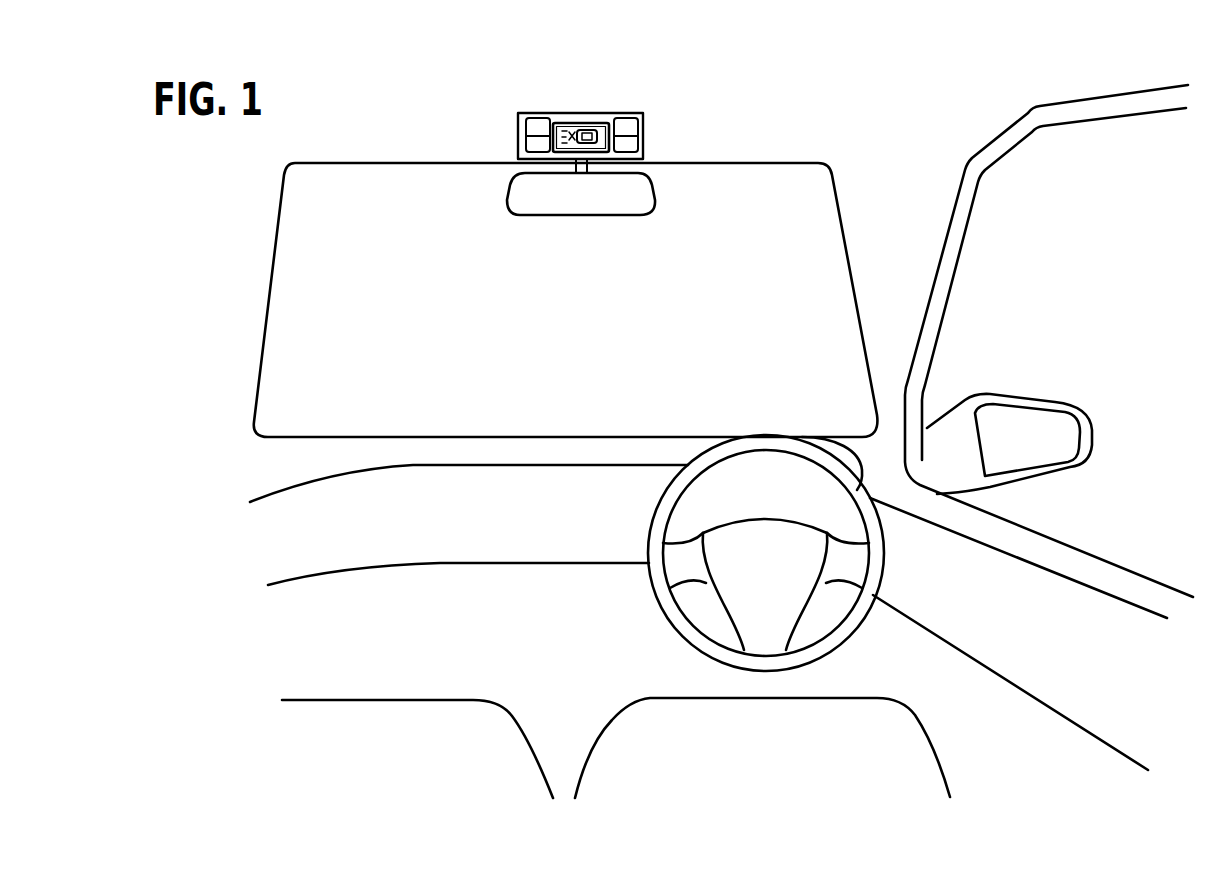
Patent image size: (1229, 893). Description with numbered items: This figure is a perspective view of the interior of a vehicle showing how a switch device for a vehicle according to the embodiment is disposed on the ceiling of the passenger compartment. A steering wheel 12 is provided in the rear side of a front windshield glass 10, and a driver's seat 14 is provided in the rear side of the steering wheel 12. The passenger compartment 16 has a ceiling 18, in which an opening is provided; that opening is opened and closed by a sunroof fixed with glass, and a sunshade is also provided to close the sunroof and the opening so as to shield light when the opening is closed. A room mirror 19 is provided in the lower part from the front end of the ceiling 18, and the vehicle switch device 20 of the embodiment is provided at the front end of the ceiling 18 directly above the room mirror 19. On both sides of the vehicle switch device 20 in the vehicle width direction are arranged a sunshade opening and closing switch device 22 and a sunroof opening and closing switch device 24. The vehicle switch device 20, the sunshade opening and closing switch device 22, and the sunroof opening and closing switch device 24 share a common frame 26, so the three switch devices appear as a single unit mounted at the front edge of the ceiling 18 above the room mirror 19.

The front windshield glass 10 is at (387, 255).
The steering wheel 12 is at (847, 437).
The driver's seat 14 is at (883, 740).
The passenger compartment 16 is at (427, 635).
The ceiling 18 is at (787, 7).
The room mirror 19 is at (578, 215).
The vehicle switch device 20 is at (579, 81).
The sunshade opening and closing switch device 22 is at (538, 128).
The sunroof opening and closing switch device 24 is at (632, 133).
The common frame 26 is at (572, 101).